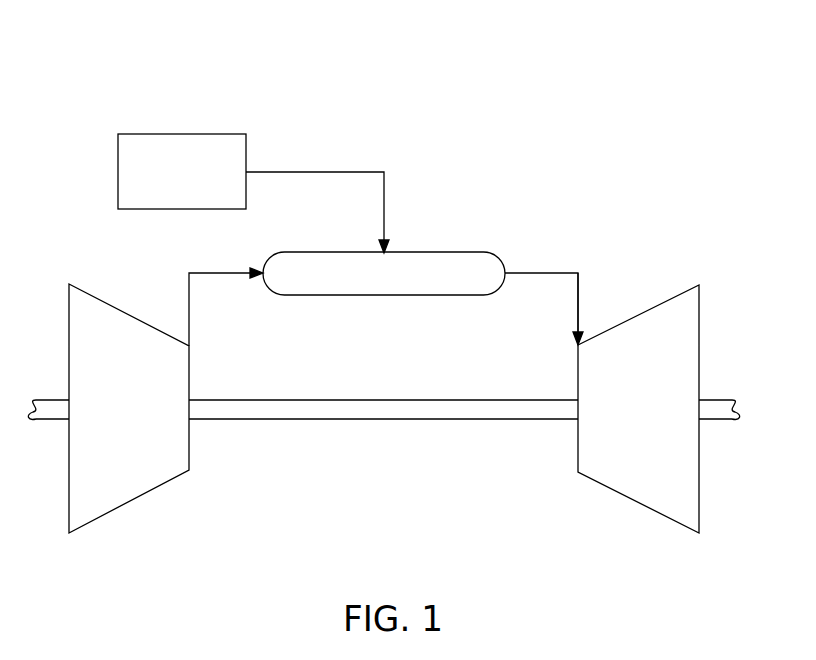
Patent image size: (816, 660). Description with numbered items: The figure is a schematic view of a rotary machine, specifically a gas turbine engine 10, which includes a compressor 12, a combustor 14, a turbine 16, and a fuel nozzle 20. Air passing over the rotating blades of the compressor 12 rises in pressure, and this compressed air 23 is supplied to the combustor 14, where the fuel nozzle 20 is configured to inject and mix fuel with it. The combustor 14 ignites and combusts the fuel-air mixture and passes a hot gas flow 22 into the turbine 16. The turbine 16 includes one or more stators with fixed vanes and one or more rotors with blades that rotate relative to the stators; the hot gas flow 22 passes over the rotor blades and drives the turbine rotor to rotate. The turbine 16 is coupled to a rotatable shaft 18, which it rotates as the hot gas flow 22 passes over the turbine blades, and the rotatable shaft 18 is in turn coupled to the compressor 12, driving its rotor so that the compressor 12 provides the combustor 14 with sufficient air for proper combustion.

The gas turbine engine 10 is at (570, 100).
The compressor 12 is at (69, 362).
The combustor 14 is at (448, 252).
The turbine 16 is at (699, 362).
The rotatable shaft 18 is at (383, 420).
The fuel nozzle 20 is at (180, 134).
The hot gas flow 22 is at (558, 272).
The compressed air 23 is at (208, 272).